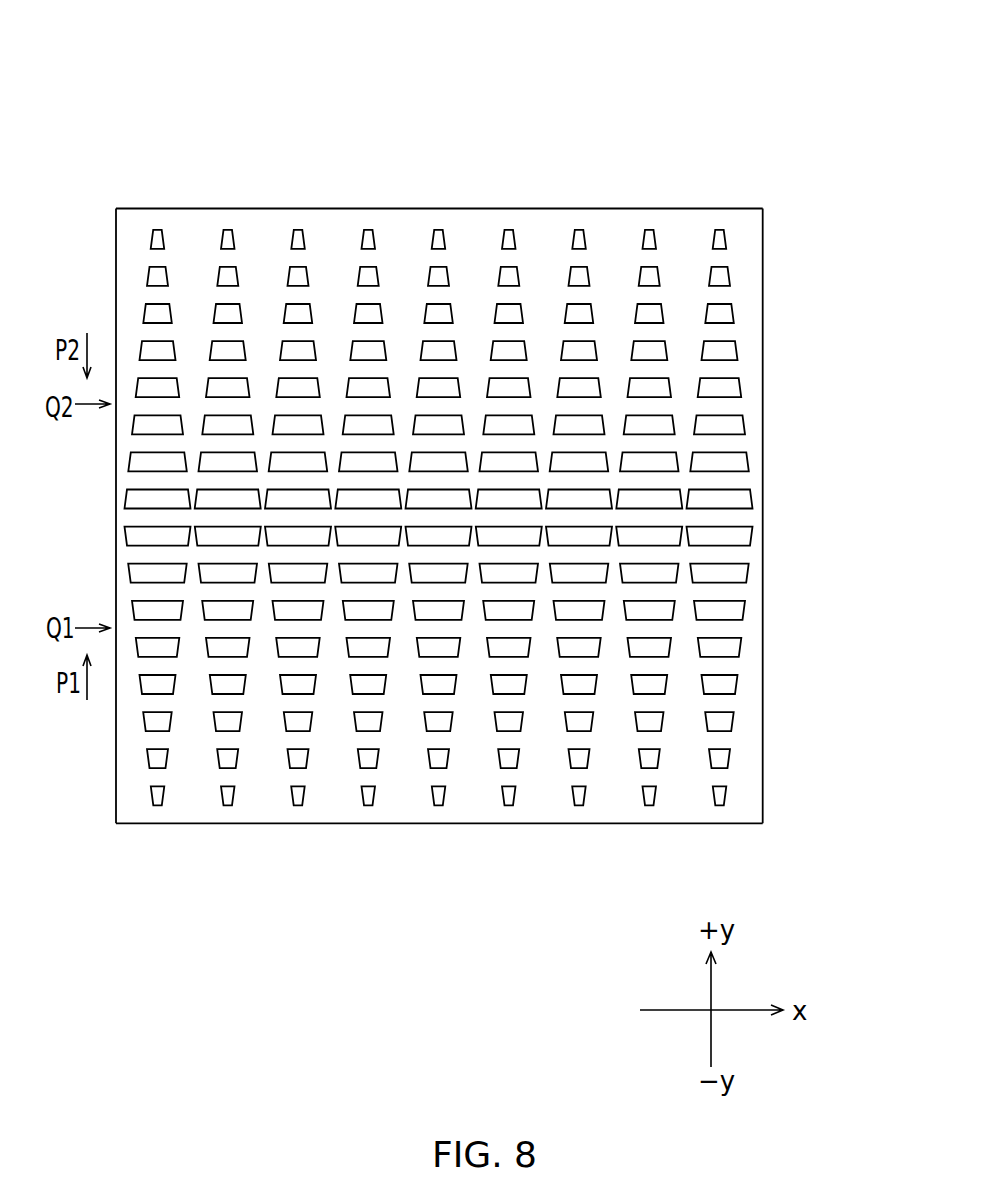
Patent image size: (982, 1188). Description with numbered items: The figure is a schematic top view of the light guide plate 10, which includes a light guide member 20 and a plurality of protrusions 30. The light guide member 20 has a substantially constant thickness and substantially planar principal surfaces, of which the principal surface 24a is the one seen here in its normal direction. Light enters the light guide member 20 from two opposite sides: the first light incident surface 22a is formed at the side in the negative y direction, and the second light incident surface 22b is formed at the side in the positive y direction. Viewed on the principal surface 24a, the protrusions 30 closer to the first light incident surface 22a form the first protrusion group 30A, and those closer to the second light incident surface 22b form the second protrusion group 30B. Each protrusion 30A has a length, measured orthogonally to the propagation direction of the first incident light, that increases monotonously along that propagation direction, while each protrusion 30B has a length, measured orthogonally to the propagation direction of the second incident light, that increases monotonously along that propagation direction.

The light guide plate 10 is at (648, 78).
The light guide member 20 is at (679, 185).
The first light incident surface 22a is at (213, 823).
The second light incident surface 22b is at (212, 208).
The principal surface 24a is at (753, 778).
The protrusions 30 is at (830, 400).
The first protrusion group 30A is at (748, 568).
The second protrusion group 30B is at (743, 423).